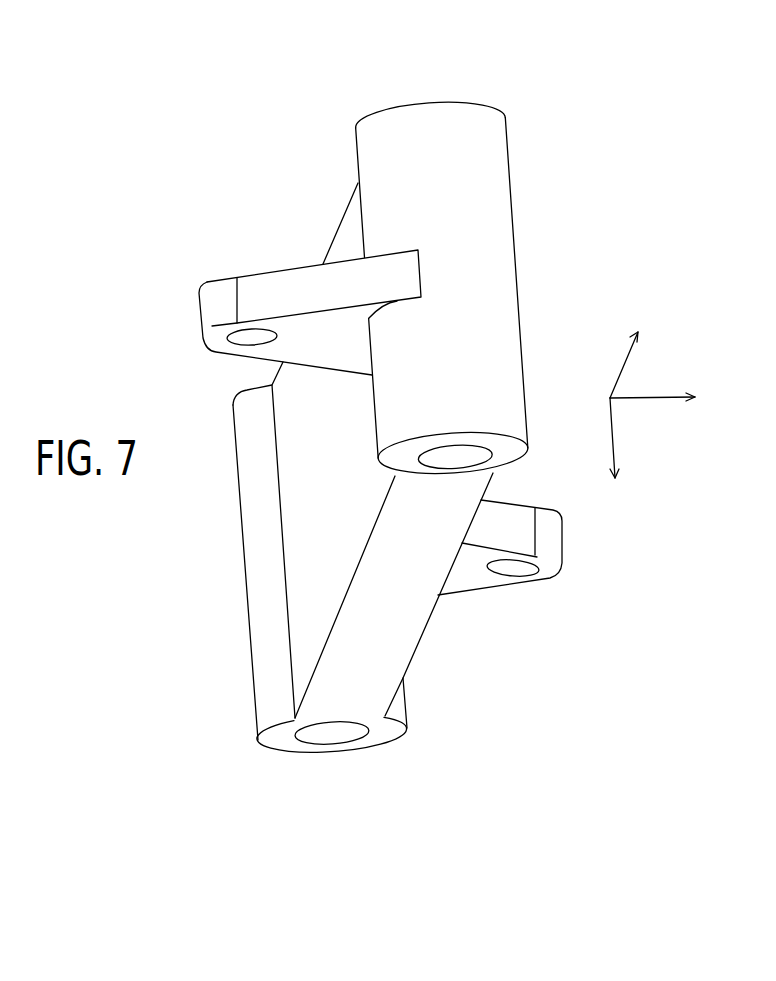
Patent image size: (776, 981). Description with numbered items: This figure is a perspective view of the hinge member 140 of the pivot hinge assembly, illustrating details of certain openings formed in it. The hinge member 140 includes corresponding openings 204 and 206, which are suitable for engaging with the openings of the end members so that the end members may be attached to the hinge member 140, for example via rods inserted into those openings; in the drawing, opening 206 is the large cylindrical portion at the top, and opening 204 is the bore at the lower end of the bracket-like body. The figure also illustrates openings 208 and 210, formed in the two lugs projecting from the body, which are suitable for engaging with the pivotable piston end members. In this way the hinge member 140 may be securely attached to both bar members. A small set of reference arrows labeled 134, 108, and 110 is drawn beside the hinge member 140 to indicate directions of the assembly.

The hinge member 140 is at (549, 232).
The opening 206 is at (425, 102).
The opening 204 is at (243, 394).
The opening 208 is at (251, 339).
The opening 210 is at (528, 583).
The axis direction 134 is at (622, 370).
The axis direction 108 is at (635, 397).
The axis direction 110 is at (612, 422).